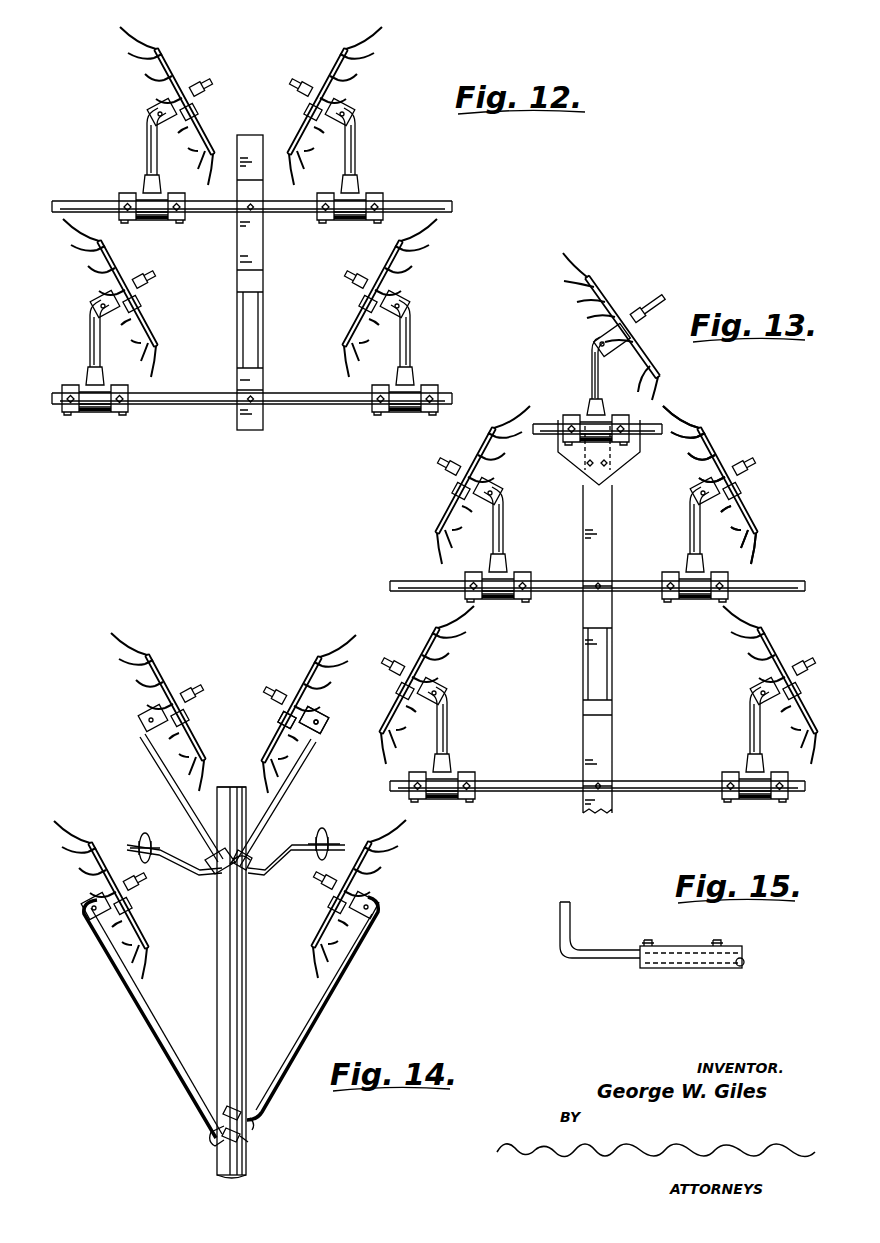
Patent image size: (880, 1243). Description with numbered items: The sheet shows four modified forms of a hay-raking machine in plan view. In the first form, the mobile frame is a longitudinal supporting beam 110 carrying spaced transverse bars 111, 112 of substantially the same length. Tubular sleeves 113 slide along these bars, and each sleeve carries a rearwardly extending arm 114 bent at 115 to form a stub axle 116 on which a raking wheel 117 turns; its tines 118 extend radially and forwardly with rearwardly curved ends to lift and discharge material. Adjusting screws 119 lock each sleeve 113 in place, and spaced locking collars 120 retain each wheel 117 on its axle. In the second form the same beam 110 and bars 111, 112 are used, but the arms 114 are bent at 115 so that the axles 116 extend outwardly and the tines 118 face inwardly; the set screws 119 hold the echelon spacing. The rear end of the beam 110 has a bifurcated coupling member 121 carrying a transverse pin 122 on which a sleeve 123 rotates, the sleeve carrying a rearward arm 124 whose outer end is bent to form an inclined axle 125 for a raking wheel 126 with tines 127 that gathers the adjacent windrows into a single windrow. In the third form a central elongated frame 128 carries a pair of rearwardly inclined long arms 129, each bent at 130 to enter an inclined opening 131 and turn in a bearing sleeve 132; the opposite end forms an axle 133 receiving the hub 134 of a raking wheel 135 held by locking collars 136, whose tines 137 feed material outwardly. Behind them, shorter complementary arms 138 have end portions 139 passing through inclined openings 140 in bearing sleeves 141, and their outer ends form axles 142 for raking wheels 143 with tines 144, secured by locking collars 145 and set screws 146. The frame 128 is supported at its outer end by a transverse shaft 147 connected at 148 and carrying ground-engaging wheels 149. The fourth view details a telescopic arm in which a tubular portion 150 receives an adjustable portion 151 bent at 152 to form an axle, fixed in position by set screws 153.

In FIG. 12, the supporting beam 110 is at (257, 253).
In FIG. 13, the supporting beam 110 is at (600, 610).
In FIG. 12, the front transverse bar 111 is at (296, 394).
In FIG. 13, the front transverse bar 111 is at (692, 782).
In FIG. 12, the rear transverse bar 112 is at (298, 214).
In FIG. 13, the rear transverse bar 112 is at (568, 592).
In FIG. 12, the tubular sleeve 113 is at (356, 202).
In FIG. 13, the tubular sleeve 113 is at (698, 598).
In FIG. 12, the arm 114 is at (147, 138).
In FIG. 13, the arm 114 is at (500, 530).
In FIG. 12, the bend of arm 115 is at (350, 118).
In FIG. 13, the bend of arm 115 is at (690, 504).
In FIG. 12, the stub axle 116 is at (120, 32).
In FIG. 13, the stub axle 116 is at (454, 482).
In FIG. 12, the raking wheel 117 is at (356, 62).
In FIG. 13, the raking wheel 117 is at (474, 450).
In FIG. 12, the tines 118 is at (372, 52).
In FIG. 13, the tines 118 is at (680, 418).
In FIG. 12, the adjusting screw 119 is at (330, 222).
In FIG. 13, the adjusting screw 119 is at (522, 590).
In FIG. 12, the locking collar 120 is at (198, 86).
In FIG. 13, the locking collar 120 is at (598, 338).
In FIG. 13, the bifurcated coupling member 121 is at (560, 448).
In FIG. 13, the transverse pin 122 is at (540, 424).
In FIG. 13, the sleeve 123 is at (604, 420).
In FIG. 13, the rearwardly extending arm 124 is at (592, 366).
In FIG. 13, the inclined axle 125 is at (644, 312).
In FIG. 13, the raking wheel 126 is at (602, 290).
In FIG. 13, the tines 127 is at (572, 262).
In FIG. 14, the supporting frame 128 is at (232, 996).
In FIG. 14, the rearwardly inclined arm 129 is at (148, 1040).
In FIG. 15, the rearwardly inclined arm 129 is at (732, 952).
In FIG. 14, the bent forward end 130 is at (260, 1114).
In FIG. 14, the inclined opening 131 is at (246, 1140).
In FIG. 14, the bearing sleeve 132 is at (230, 1104).
In FIG. 14, the axle 133 is at (338, 890).
In FIG. 14, the hub 134 is at (112, 906).
In FIG. 14, the raking wheel 135 is at (100, 856).
In FIG. 14, the locking collar 136 is at (94, 904).
In FIG. 14, the tines 137 is at (88, 844).
In FIG. 14, the complementary arm 138 is at (206, 812).
In FIG. 14, the end portion 139 is at (214, 868).
In FIG. 14, the inclined opening 140 is at (258, 874).
In FIG. 14, the bearing sleeve 141 is at (262, 824).
In FIG. 14, the axle 142 is at (188, 696).
In FIG. 14, the raking wheel 143 is at (162, 684).
In FIG. 14, the tines 144 is at (132, 652).
In FIG. 14, the locking collar 145 is at (144, 720).
In FIG. 14, the set screw 146 is at (136, 734).
In FIG. 14, the transverse shaft 147 is at (180, 856).
In FIG. 14, the shaft connection 148 is at (234, 790).
In FIG. 14, the ground-engaging wheel 149 is at (146, 836).
In FIG. 15, the tubular portion 150 is at (738, 966).
In FIG. 15, the adjustable portion 151 is at (624, 950).
In FIG. 15, the bend forming axle 152 is at (560, 922).
In FIG. 15, the set screw 153 is at (716, 940).